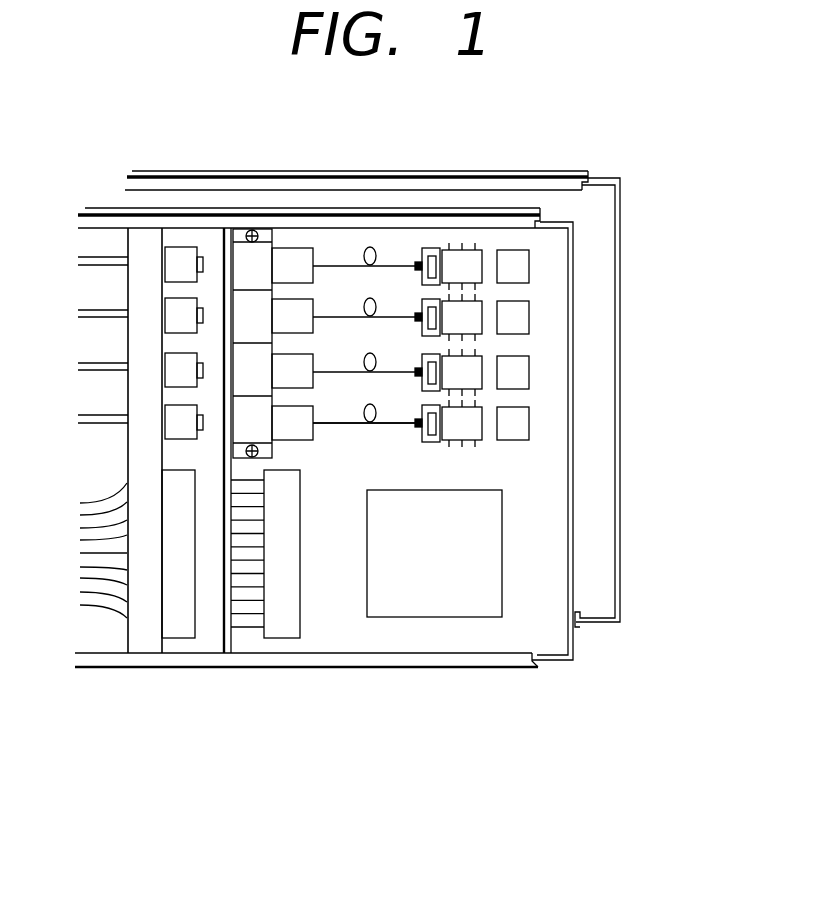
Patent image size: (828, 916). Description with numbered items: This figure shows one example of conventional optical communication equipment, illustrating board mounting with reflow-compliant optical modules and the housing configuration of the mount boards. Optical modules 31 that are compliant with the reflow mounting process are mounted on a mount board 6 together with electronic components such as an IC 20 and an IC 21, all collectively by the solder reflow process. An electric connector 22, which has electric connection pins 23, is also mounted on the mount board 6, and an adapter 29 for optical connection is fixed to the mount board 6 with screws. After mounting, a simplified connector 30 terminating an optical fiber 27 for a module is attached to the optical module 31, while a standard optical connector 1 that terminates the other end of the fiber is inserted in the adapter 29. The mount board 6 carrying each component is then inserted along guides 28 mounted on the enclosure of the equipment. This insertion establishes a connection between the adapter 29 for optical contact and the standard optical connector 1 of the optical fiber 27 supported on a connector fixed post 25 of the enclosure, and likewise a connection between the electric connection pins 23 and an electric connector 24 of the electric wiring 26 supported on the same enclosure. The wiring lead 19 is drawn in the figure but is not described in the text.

The standard optical connector 1 is at (182, 250).
The mount board 6 is at (602, 250).
The lead wire 19 is at (330, 425).
The IC 20 is at (518, 427).
The IC 21 is at (433, 603).
The electric connector 22 is at (285, 628).
The electric connection pins 23 is at (243, 627).
The electric connector 24 is at (178, 627).
The connector fixed post 25 is at (143, 627).
The electric wiring 26 is at (102, 612).
The optical fiber 27 is at (105, 258).
The guides 28 is at (512, 215).
The adapter 29 is at (258, 255).
The simplified connector 30 is at (417, 253).
The optical module 31 is at (458, 257).